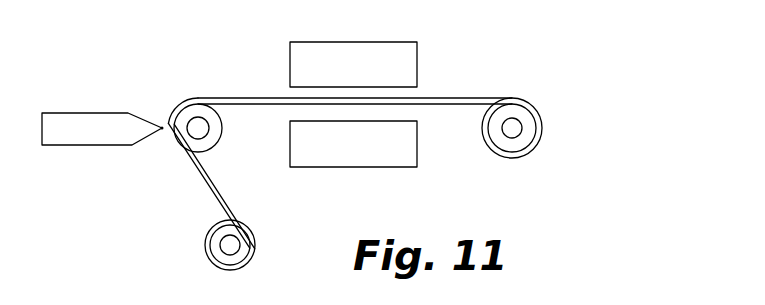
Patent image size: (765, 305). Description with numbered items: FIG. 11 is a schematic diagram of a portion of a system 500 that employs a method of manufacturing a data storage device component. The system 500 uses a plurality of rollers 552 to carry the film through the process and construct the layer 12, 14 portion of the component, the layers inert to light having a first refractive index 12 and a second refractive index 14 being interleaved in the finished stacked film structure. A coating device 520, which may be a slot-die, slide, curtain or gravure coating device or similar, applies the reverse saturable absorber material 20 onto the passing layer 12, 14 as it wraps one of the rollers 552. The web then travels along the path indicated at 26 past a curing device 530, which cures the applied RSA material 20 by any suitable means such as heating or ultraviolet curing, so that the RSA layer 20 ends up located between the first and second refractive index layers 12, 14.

The system 500 is at (536, 43).
The curing device 530 is at (280, 33).
The conveyor belt 26 is at (580, 97).
The layers inert to light having a first refractive index 12 is at (202, 180).
The layers inert to light having a second refractive index 14 is at (191, 196).
The rollers 552 is at (211, 141).
The coating device 520 is at (98, 135).
The RSA material 20 is at (163, 129).